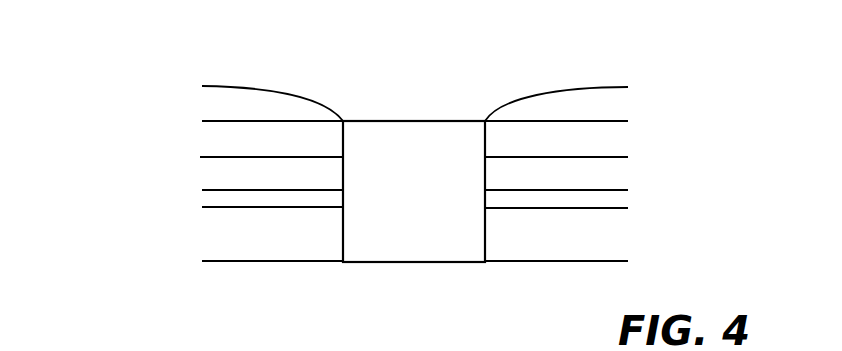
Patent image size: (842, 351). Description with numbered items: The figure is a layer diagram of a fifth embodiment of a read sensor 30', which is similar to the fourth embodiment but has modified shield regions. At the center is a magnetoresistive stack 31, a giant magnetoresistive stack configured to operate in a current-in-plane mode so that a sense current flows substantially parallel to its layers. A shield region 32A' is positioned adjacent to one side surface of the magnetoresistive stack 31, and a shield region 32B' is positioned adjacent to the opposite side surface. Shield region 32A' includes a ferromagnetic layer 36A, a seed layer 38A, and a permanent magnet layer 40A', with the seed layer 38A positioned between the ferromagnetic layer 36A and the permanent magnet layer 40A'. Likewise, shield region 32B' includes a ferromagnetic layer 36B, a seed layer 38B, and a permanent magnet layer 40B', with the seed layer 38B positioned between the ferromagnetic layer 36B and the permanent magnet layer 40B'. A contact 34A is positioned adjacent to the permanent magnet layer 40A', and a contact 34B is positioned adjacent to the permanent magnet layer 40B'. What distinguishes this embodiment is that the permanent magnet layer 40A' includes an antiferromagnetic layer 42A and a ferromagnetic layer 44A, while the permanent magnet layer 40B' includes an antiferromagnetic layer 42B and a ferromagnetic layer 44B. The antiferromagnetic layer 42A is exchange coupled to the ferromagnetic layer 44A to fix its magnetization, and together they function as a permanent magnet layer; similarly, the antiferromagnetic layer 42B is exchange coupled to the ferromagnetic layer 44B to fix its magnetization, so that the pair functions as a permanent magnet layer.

The read sensor 30' is at (437, 132).
The magnetoresistive stack 31 is at (380, 135).
The shield region 32A' is at (188, 174).
The shield region 32B' is at (663, 175).
The contact 34A is at (220, 103).
The contact 34B is at (602, 106).
The ferromagnetic layer 36A is at (228, 233).
The ferromagnetic layer 36B is at (568, 243).
The seed layer 38A is at (223, 196).
The seed layer 38B is at (588, 198).
The permanent magnet layer 40A' is at (230, 155).
The permanent magnet layer 40B' is at (611, 156).
The antiferromagnetic layer 42A is at (271, 171).
The antiferromagnetic layer 42B is at (556, 170).
The ferromagnetic layer 44A is at (272, 138).
The ferromagnetic layer 44B is at (556, 137).